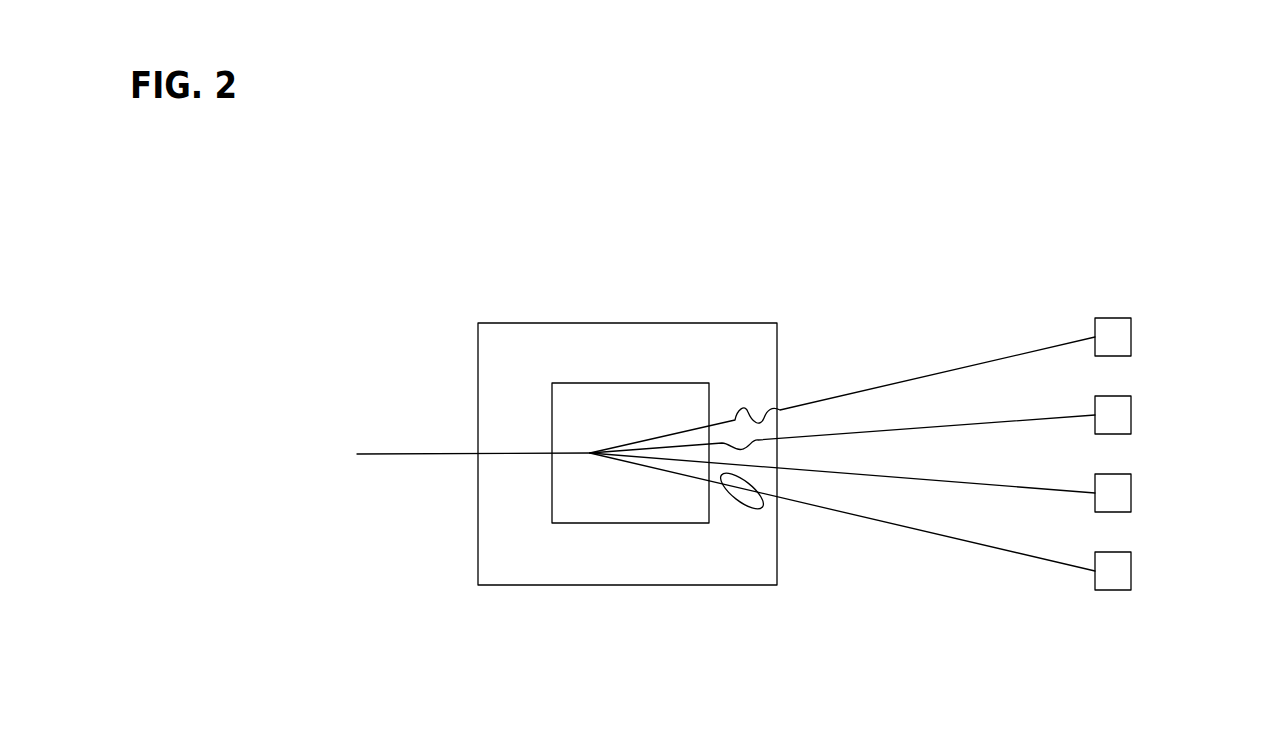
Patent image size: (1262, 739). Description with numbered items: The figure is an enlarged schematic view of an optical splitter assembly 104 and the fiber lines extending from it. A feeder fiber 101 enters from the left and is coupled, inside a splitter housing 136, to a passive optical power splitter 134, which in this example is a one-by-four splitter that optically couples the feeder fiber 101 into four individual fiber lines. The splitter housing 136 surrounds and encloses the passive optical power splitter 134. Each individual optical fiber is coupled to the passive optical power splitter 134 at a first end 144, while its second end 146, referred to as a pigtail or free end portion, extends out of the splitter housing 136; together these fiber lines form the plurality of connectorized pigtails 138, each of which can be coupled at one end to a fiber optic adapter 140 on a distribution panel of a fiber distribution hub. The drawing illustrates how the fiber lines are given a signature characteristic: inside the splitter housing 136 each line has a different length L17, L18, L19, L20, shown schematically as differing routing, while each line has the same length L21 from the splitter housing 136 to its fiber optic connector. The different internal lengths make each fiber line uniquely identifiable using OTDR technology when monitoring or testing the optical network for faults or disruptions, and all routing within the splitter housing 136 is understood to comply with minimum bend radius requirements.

The feeder fiber 101 is at (398, 454).
The optical splitter assembly 104 is at (806, 268).
The passive optical power splitter 134 is at (607, 523).
The splitter housing 136 is at (520, 323).
The connectorized pigtails 138 is at (969, 346).
The fiber optic adapter 140 is at (1150, 313).
The first end 144 is at (583, 468).
The second end 146 is at (1072, 587).
The fiber line length L17 is at (725, 443).
The fiber line length L18 is at (744, 405).
The fiber line length L19 is at (770, 466).
The fiber line length L20 is at (727, 498).
The line length L21 is at (1050, 347).